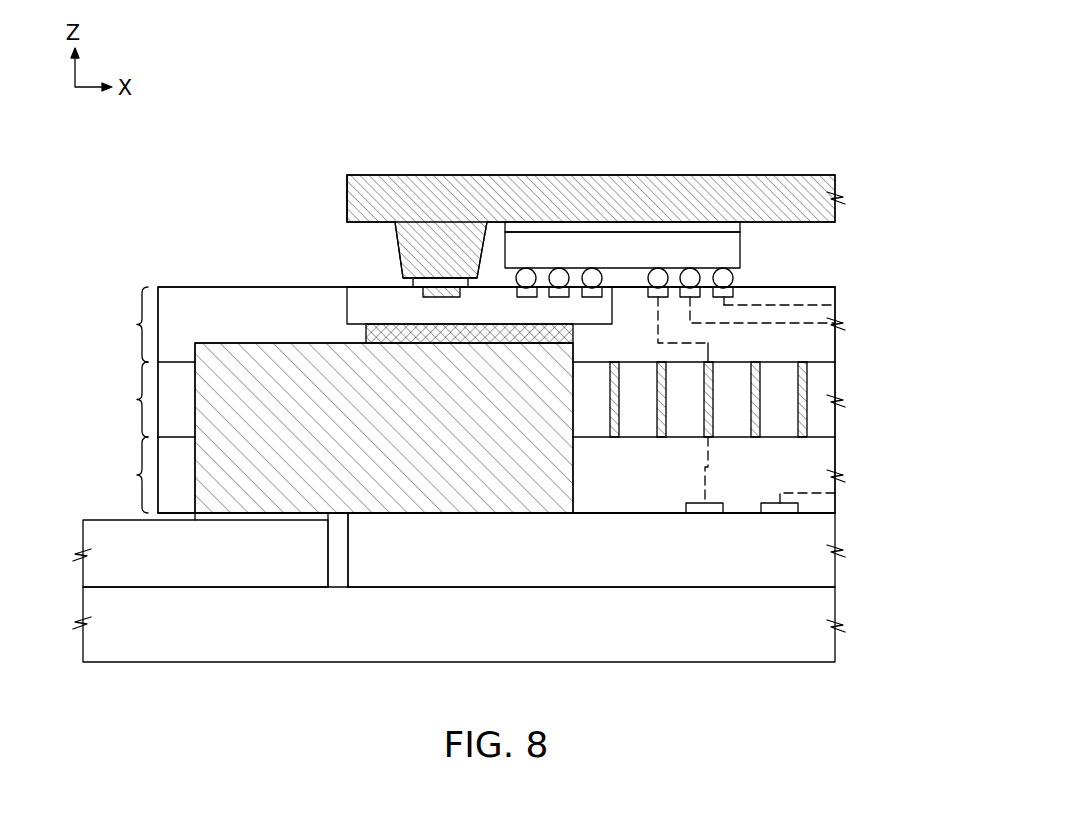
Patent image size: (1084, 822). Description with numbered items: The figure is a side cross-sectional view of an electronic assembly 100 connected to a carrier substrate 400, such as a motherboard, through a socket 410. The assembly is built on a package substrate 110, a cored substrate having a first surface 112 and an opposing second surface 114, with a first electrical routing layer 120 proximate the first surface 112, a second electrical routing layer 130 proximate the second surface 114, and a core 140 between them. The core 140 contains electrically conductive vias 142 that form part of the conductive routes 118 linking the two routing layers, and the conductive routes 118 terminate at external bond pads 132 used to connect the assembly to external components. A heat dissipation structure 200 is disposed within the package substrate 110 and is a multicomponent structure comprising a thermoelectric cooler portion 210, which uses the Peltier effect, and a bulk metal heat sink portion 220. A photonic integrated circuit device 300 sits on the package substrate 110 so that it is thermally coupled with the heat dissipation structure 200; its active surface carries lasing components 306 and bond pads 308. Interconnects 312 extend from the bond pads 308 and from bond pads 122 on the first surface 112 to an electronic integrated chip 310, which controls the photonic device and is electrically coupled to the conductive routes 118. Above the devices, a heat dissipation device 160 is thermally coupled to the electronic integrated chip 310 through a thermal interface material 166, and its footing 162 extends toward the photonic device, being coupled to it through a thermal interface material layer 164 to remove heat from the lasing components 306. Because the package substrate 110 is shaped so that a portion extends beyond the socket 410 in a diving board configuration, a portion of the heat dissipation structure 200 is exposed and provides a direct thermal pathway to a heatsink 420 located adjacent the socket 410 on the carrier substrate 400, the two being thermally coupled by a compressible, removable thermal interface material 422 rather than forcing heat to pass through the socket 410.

The electronic assembly 100 is at (232, 113).
The package substrate 110 is at (852, 345).
The first surface 112 is at (818, 287).
The second surface 114 is at (742, 513).
The conductive route 118 is at (763, 305).
The first electrical routing layer 120 is at (135, 324).
The bond pads 122 is at (734, 287).
The second electrical routing layer 130 is at (135, 475).
The external bond pads 132 is at (780, 507).
The core 140 is at (455, 399).
The electrically conductive vias 142 is at (805, 396).
The heat dissipation device 160 is at (813, 192).
The footing 162 is at (350, 215).
The thermal interface material layer 164 is at (447, 285).
The thermal interface material 166 is at (667, 227).
The heat dissipation structure 200 is at (578, 497).
The thermoelectric cooler portion 210 is at (378, 302).
The heat sink portion 220 is at (384, 422).
The photonic integrated circuit device 300 is at (392, 240).
The lasing components 306 is at (437, 292).
The bond pads 308 is at (525, 290).
The electronic integrated chip 310 is at (610, 250).
The interconnects 312 is at (692, 277).
The carrier substrate 400 is at (459, 624).
The socket 410 is at (596, 550).
The heatsink 420 is at (200, 553).
The compressible/removable thermal interface material 422 is at (270, 518).